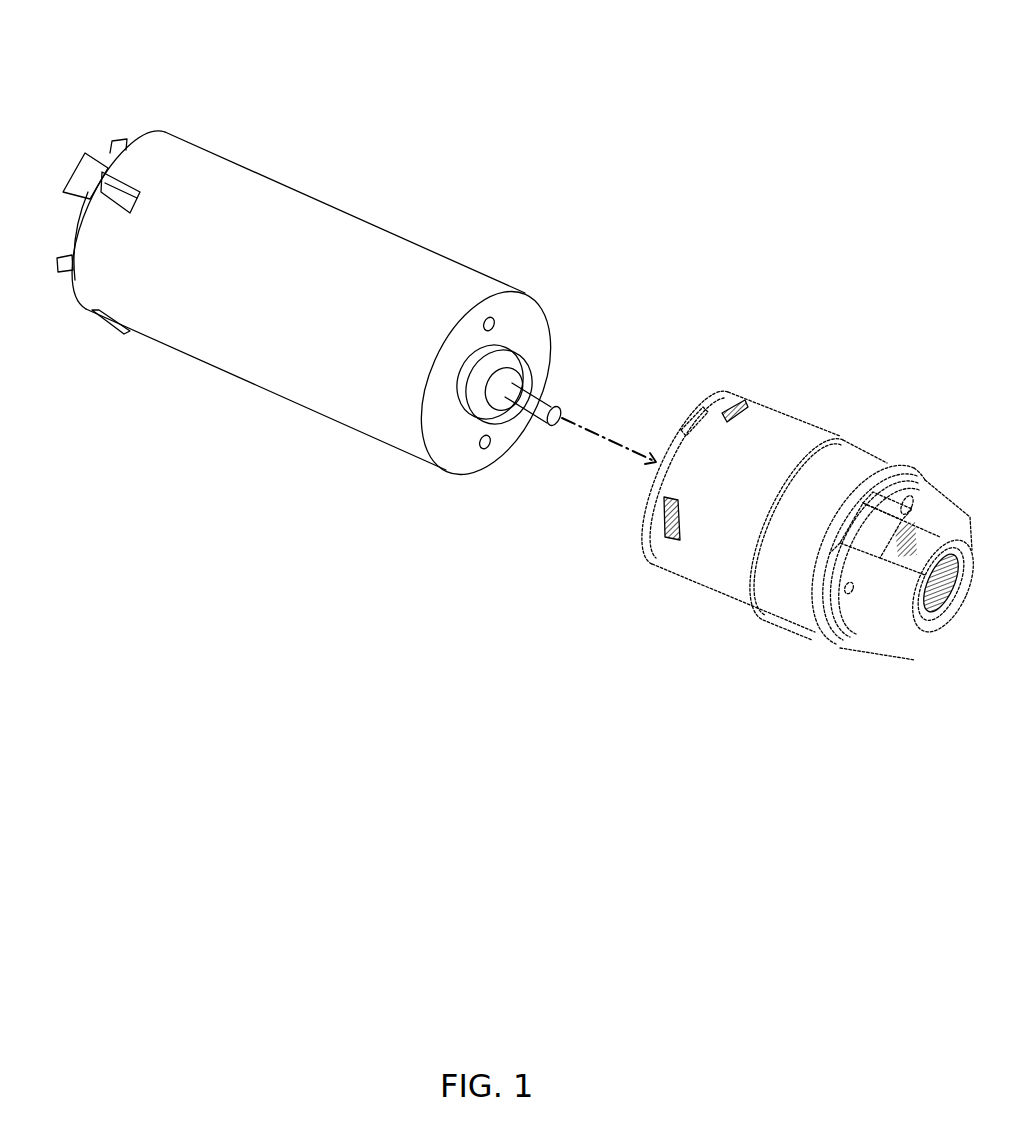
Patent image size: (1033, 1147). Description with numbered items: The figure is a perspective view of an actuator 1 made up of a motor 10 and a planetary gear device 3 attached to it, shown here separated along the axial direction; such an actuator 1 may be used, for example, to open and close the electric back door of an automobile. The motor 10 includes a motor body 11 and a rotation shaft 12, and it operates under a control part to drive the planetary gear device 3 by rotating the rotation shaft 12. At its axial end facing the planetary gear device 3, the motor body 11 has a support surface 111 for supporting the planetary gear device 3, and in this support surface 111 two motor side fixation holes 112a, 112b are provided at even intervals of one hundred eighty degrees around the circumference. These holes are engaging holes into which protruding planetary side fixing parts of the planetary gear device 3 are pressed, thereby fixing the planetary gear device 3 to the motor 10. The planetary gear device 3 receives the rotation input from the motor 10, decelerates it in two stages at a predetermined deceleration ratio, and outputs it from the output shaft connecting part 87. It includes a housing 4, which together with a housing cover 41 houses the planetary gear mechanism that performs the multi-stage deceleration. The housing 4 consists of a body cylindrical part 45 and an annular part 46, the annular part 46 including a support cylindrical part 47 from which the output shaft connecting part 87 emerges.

The actuator 1 is at (541, 30).
The motor 10 is at (281, 178).
The motor body 11 is at (413, 240).
The support surface 111 is at (517, 335).
The motor side fixation hole 112a is at (493, 322).
The motor side fixation hole 112b is at (485, 448).
The rotation shaft 12 is at (548, 400).
The planetary gear device 3 is at (842, 430).
The housing 4 is at (862, 695).
The housing cover 41 is at (648, 560).
The body cylindrical part 45 is at (716, 600).
The annular part 46 is at (830, 603).
The support cylindrical part 47 is at (895, 598).
The output shaft connecting part 87 is at (930, 618).